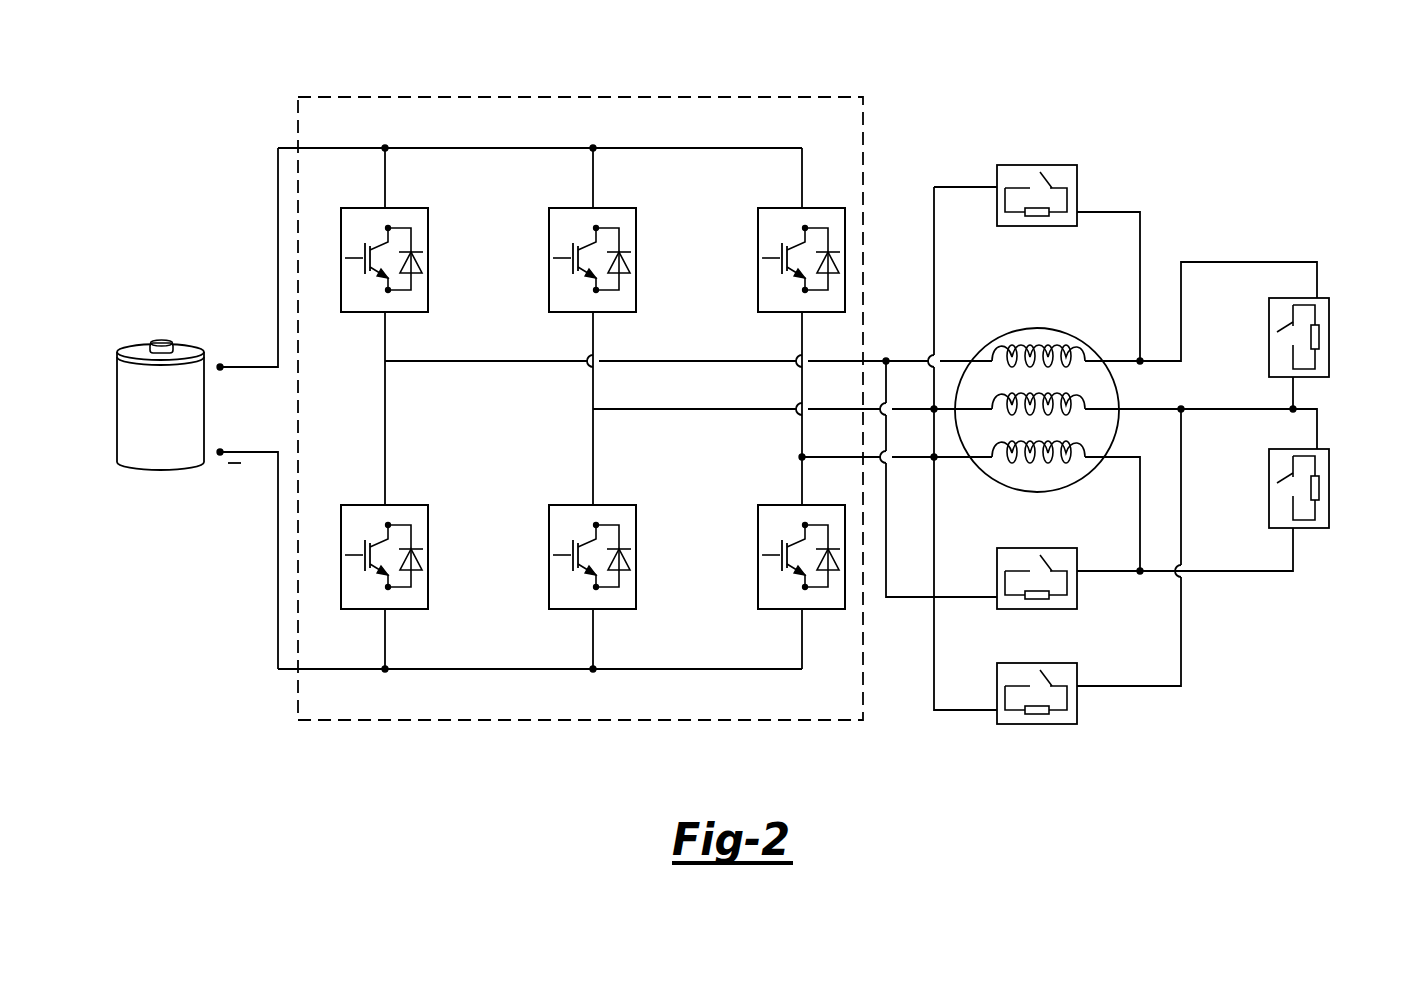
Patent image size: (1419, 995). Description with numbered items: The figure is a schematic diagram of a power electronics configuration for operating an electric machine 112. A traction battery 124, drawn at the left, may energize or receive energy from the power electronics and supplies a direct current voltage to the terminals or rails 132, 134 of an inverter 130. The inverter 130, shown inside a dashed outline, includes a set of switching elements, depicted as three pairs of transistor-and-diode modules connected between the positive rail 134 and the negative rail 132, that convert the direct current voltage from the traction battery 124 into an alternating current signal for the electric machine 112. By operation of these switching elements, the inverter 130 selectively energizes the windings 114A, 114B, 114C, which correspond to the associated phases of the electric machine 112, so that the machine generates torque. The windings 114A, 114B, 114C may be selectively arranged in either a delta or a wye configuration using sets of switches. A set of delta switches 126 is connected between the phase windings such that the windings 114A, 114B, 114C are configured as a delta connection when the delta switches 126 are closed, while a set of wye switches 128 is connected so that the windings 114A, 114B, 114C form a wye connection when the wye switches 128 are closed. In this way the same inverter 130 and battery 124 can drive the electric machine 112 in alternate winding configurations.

The electric machine 112 is at (1079, 387).
The winding 114A is at (1019, 345).
The winding 114B is at (1080, 401).
The winding 114C is at (1046, 468).
The traction battery 124 is at (162, 340).
The delta switches 126 is at (1036, 163).
The wye switches 128 is at (1330, 335).
The inverter 130 is at (460, 66).
The rail 132 is at (270, 570).
The rail 134 is at (270, 224).